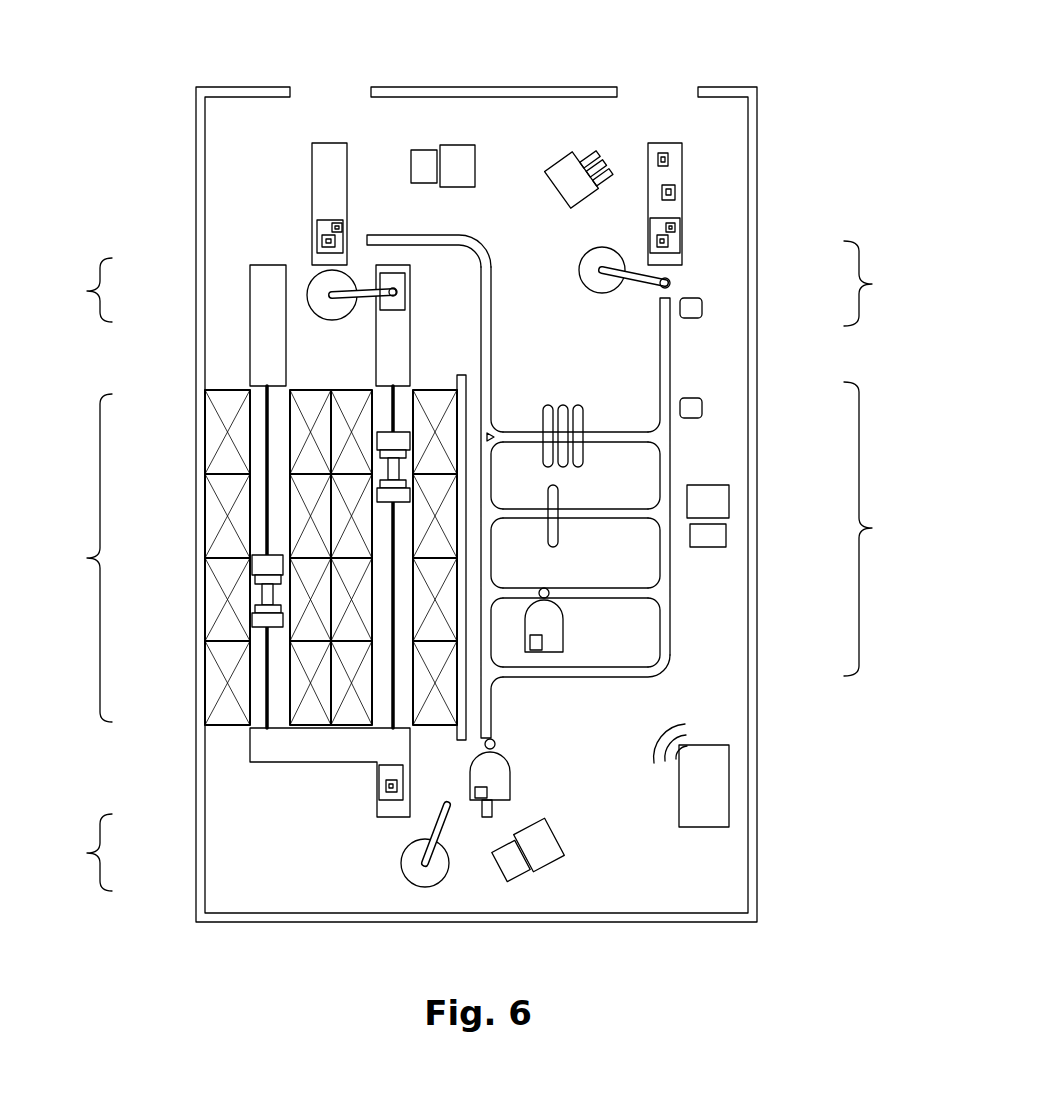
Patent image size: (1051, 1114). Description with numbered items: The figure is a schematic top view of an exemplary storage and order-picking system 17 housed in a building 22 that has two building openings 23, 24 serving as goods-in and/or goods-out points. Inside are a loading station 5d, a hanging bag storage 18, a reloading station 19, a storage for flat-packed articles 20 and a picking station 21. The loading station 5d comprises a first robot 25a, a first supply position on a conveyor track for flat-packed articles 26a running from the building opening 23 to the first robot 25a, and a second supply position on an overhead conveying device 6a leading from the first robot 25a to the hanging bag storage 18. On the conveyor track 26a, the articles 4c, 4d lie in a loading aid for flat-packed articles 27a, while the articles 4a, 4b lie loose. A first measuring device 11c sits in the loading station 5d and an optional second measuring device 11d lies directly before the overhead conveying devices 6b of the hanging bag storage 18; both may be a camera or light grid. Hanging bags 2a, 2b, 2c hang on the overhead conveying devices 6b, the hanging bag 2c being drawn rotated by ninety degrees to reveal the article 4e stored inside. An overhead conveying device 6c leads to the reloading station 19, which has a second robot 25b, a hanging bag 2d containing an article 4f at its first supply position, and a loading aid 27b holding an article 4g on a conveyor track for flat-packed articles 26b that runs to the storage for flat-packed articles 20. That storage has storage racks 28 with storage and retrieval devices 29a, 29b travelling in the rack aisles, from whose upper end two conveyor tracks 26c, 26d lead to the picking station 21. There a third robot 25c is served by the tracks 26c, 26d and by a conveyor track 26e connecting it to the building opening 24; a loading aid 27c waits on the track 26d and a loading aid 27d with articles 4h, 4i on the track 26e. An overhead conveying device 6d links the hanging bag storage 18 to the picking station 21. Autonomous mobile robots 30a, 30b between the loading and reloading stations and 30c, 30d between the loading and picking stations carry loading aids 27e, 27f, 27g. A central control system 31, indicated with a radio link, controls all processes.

The storage and order-picking system 17 is at (817, 60).
The hanging bag storage 18 is at (878, 528).
The reloading station 19 is at (70, 853).
The storage for flat-packed articles 20 is at (70, 558).
The picking station 21 is at (66, 291).
The building 22 is at (752, 892).
The building opening 23 is at (662, 80).
The building opening 24 is at (325, 78).
The hanging bag 2a is at (567, 405).
The hanging bag 2b is at (553, 498).
The hanging bag 2c is at (553, 625).
The hanging bag 2d is at (500, 780).
The article 4a is at (665, 158).
The article 4b is at (668, 195).
The article 4c is at (672, 227).
The article 4d is at (667, 242).
The article 4e is at (542, 642).
The article 4f is at (487, 793).
The article 4g is at (385, 793).
The article 4h is at (322, 242).
The article 4i is at (342, 228).
The loading station 5d is at (878, 284).
The overhead conveying device 6a is at (667, 369).
The overhead conveying devices 6b is at (585, 673).
The overhead conveying device 6c is at (484, 708).
The overhead conveying device 6d is at (448, 236).
The first measuring device 11c is at (702, 308).
The second measuring device 11d is at (703, 410).
The first robot 25a is at (668, 278).
The second robot 25b is at (412, 862).
The third robot 25c is at (330, 312).
The conveyor track for flat-packed articles 26a is at (672, 212).
The conveyor track for flat-packed articles 26b is at (262, 747).
The conveyor track for flat-packed articles 26c is at (262, 338).
The conveyor track for flat-packed articles 26d is at (395, 365).
The conveyor track for flat-packed articles 26e is at (330, 162).
The loading aid for flat-packed articles 27a is at (650, 227).
The loading aid for flat-packed articles 27b is at (390, 772).
The loading aid for flat-packed articles 27c is at (403, 280).
The loading aid for flat-packed articles 27d is at (322, 227).
The loading aid for flat-packed articles 27e is at (712, 535).
The loading aid for flat-packed articles 27f is at (508, 860).
The loading aid for flat-packed articles 27g is at (423, 155).
The storage racks 28 is at (208, 437).
The storage and retrieval device 29a is at (268, 575).
The storage and retrieval device 29b is at (397, 442).
The autonomous mobile robot 30a is at (715, 502).
The autonomous mobile robot 30b is at (543, 848).
The autonomous mobile robot 30c is at (455, 155).
The autonomous mobile robot 30d is at (598, 152).
The central control system 31 is at (713, 803).